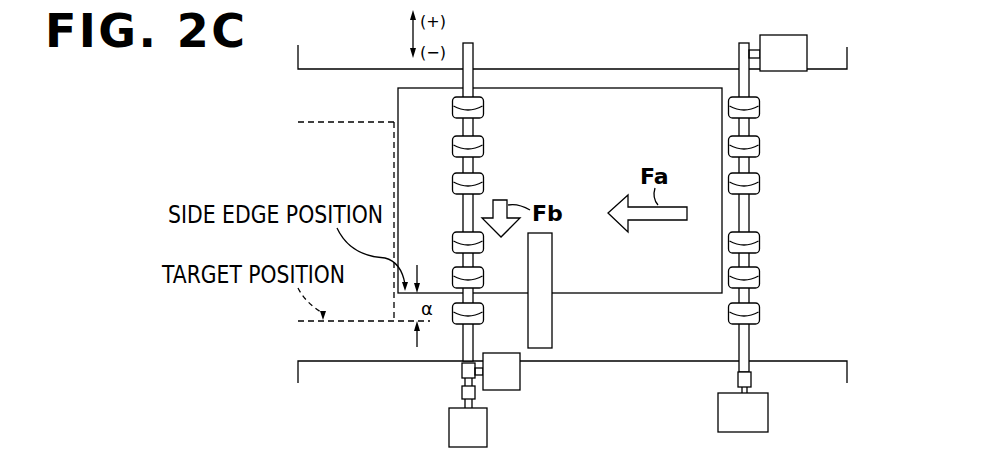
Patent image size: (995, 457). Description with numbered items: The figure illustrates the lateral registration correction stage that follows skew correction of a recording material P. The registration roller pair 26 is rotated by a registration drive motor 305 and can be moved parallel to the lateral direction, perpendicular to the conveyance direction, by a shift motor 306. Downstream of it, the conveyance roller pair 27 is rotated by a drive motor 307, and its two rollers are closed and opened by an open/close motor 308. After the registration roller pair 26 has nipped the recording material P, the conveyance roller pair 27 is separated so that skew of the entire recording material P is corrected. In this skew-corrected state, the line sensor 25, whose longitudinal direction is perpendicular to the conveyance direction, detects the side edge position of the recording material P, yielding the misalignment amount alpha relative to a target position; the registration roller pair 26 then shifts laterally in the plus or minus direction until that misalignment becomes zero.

The recording material P is at (313, 121).
The line sensor 25 is at (552, 338).
The registration roller pair 26 is at (452, 108).
The conveyance roller pair 27 is at (760, 108).
The registration drive motor 305 is at (487, 425).
The shift motor 306 is at (520, 373).
The drive motor 307 is at (768, 412).
The open/close motor 308 is at (807, 45).